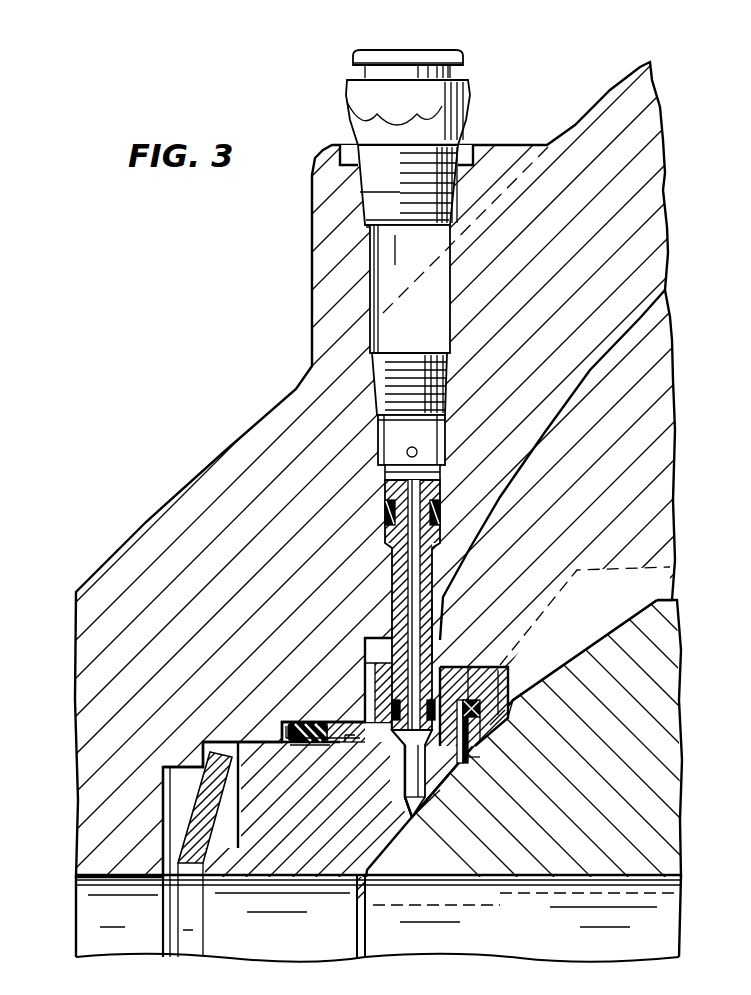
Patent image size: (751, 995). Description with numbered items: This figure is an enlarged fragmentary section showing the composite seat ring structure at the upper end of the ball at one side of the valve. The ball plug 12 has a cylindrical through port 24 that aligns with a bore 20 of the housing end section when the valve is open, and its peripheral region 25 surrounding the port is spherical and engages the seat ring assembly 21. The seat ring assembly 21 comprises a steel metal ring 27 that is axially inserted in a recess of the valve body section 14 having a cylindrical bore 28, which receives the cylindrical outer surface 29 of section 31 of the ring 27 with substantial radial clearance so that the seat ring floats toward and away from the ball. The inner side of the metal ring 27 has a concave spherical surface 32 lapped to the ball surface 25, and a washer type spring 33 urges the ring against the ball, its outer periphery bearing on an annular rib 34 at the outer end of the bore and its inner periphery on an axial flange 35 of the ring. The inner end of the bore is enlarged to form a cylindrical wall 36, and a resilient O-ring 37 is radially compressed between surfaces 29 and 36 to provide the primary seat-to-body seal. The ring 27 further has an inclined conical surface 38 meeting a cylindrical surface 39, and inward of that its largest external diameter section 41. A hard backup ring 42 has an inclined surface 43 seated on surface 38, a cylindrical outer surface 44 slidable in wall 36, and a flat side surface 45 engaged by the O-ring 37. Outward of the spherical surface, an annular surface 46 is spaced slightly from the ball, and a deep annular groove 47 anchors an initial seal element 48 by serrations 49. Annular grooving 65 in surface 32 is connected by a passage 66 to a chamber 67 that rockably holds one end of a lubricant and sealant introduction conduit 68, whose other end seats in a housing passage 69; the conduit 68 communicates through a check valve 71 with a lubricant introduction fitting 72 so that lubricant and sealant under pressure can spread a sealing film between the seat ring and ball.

The ball plug 12 is at (665, 675).
The valve body section 14 is at (287, 452).
The bore of housing end section 20 is at (125, 882).
The seat ring assembly 21 is at (446, 664).
The through port 24 is at (548, 893).
The peripheral region 25 is at (515, 706).
The metal ring 27 is at (357, 877).
The cylindrical bore 28 is at (230, 757).
The cylindrical outer surface 29 is at (262, 742).
The section of metal ring 31 is at (262, 858).
The concave spherical surface 32 is at (425, 835).
The washer type spring 33 is at (192, 812).
The annular rib 34 is at (200, 765).
The axial flange 35 is at (212, 860).
The cylindrical wall 36 is at (283, 728).
The O-ring 37 is at (300, 726).
The inclined conical surface 38 is at (328, 744).
The cylindrical surface 39 is at (362, 726).
The largest external diameter section 41 is at (392, 660).
The backup ring 42 is at (320, 730).
The inclined surface 43 is at (345, 737).
The cylindrical outer surface 44 is at (352, 722).
The flat side surface 45 is at (305, 724).
The annular surface 46 is at (508, 728).
The annular groove 47 is at (470, 700).
The initial seal element 48 is at (472, 758).
The serrations 49 is at (509, 690).
The annular grooving 65 is at (418, 820).
The passage 66 is at (415, 812).
The chamber 67 is at (425, 748).
The lubricant and sealant introduction conduit 68 is at (436, 630).
The housing passage 69 is at (438, 567).
The check valve 71 is at (395, 382).
The lubricant introduction fitting 72 is at (385, 190).